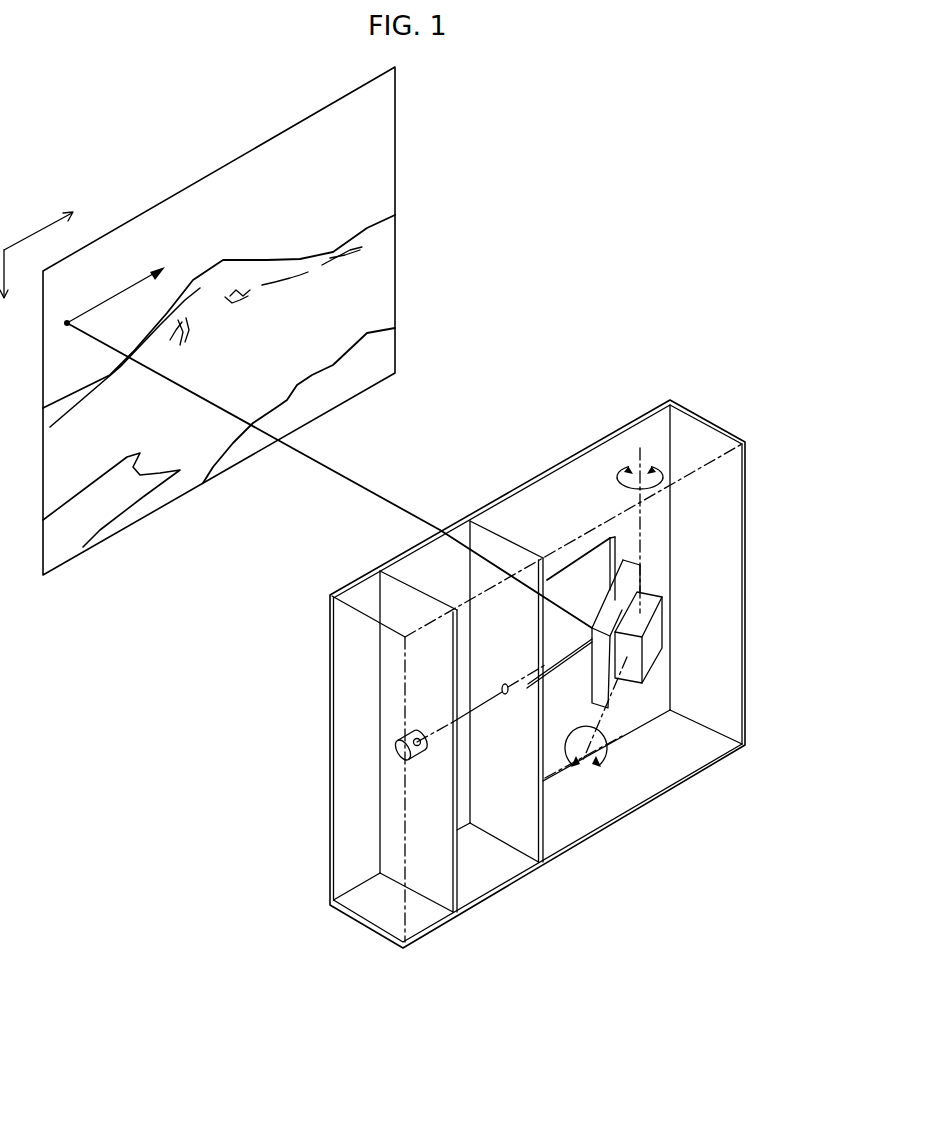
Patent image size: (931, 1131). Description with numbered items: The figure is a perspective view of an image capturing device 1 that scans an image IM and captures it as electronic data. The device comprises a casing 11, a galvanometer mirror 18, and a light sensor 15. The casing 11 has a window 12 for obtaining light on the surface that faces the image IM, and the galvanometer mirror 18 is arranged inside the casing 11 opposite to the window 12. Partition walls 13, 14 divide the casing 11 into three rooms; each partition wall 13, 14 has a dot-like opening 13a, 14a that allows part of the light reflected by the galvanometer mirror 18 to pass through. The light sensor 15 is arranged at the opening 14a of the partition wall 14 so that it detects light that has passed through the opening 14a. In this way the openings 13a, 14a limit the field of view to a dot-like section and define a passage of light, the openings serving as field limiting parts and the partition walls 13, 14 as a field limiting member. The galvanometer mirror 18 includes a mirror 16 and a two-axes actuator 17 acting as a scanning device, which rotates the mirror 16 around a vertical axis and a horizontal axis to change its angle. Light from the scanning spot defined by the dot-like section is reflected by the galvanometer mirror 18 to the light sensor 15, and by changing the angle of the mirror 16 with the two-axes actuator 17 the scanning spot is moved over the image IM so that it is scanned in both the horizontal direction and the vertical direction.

The image capturing device 1 is at (581, 417).
The casing 11 is at (697, 413).
The window 12 is at (563, 567).
The partition wall 13 is at (497, 525).
The opening 13a is at (506, 700).
The partition wall 14 is at (408, 578).
The opening 14a is at (431, 705).
The light sensor 15 is at (397, 745).
The mirror 16 is at (628, 578).
The two-axes actuator 17 is at (658, 623).
The galvanometer mirror 18 is at (718, 622).
The image IM is at (400, 117).